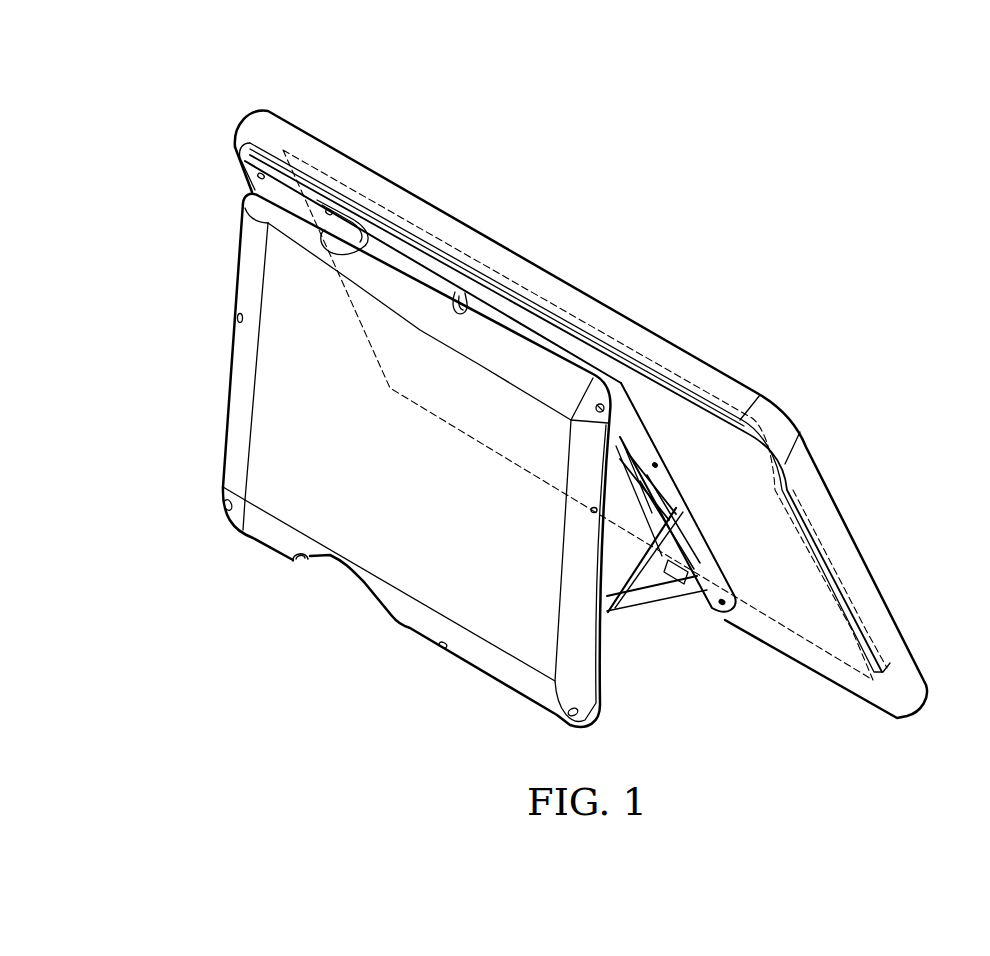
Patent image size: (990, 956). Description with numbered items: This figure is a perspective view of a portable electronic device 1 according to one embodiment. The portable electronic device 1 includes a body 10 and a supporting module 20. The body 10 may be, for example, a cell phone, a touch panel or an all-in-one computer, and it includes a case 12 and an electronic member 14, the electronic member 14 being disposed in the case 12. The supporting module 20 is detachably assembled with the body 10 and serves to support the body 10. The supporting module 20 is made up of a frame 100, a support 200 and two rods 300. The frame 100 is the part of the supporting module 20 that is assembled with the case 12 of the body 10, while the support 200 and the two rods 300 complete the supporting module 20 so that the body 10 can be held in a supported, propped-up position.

The portable electronic device 1 is at (122, 120).
The body 10 is at (803, 399).
The case 12 is at (793, 428).
The electronic member 14 is at (800, 493).
The supporting module 20 is at (786, 680).
The frame 100 is at (712, 597).
The support 200 is at (600, 690).
The rods 300 is at (662, 607).